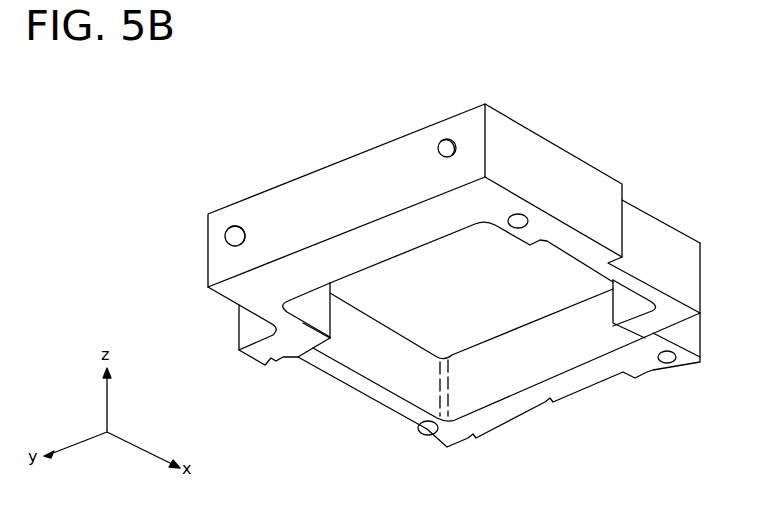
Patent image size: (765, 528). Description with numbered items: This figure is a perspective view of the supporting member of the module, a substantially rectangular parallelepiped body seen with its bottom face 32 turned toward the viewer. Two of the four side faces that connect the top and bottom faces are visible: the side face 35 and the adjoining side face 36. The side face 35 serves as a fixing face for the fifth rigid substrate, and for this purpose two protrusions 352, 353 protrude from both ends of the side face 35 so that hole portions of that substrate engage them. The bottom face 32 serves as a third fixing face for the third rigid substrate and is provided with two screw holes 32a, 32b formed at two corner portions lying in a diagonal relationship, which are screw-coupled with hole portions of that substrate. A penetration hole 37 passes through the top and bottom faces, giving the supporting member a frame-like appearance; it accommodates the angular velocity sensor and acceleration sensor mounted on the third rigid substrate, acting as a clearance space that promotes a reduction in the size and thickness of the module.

The bottom face 32 is at (503, 412).
The screw hole 32a is at (524, 216).
The screw hole 32b is at (420, 436).
The side face 35 is at (332, 188).
The side face 36 is at (570, 178).
The penetration hole 37 is at (505, 300).
The protrusion 352 is at (444, 146).
The protrusion 353 is at (230, 232).